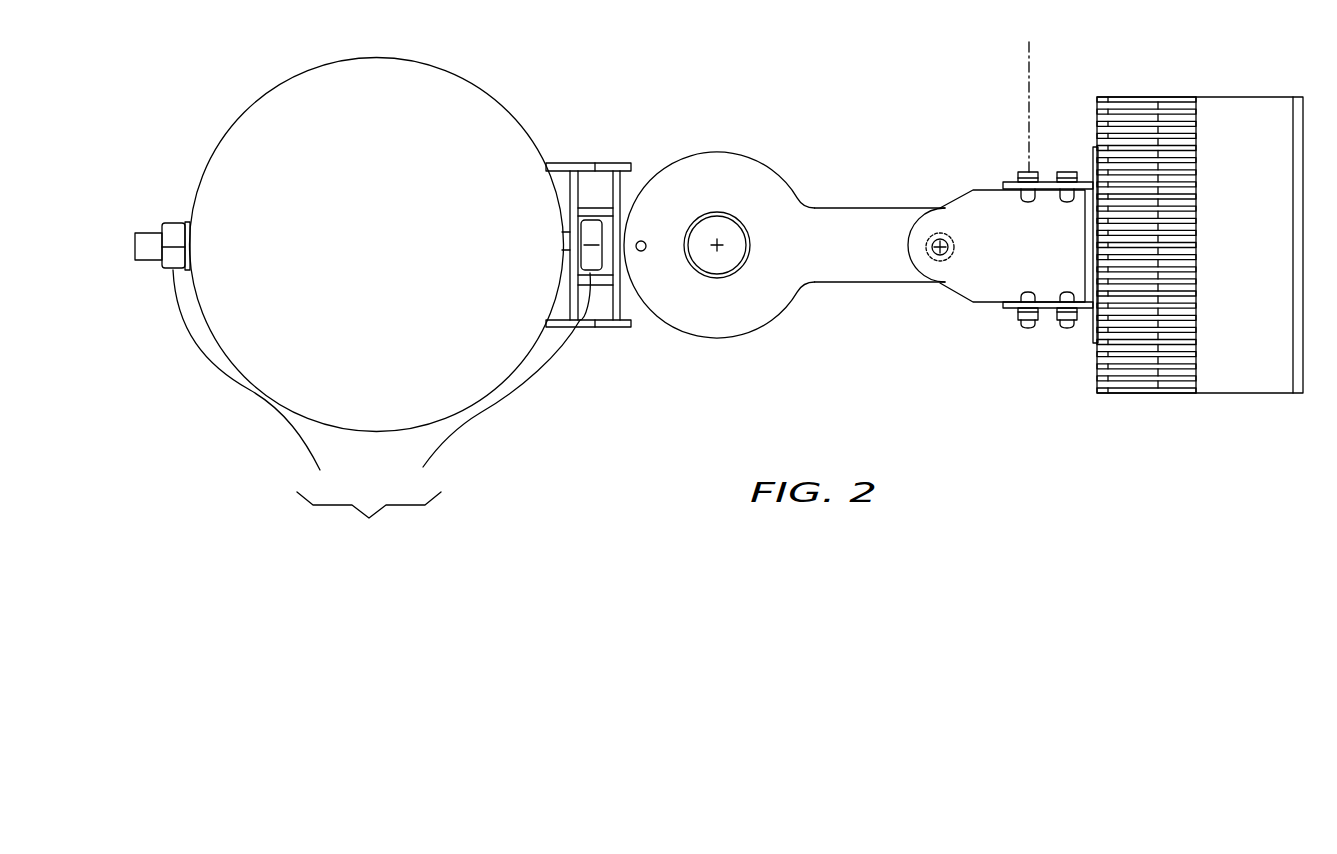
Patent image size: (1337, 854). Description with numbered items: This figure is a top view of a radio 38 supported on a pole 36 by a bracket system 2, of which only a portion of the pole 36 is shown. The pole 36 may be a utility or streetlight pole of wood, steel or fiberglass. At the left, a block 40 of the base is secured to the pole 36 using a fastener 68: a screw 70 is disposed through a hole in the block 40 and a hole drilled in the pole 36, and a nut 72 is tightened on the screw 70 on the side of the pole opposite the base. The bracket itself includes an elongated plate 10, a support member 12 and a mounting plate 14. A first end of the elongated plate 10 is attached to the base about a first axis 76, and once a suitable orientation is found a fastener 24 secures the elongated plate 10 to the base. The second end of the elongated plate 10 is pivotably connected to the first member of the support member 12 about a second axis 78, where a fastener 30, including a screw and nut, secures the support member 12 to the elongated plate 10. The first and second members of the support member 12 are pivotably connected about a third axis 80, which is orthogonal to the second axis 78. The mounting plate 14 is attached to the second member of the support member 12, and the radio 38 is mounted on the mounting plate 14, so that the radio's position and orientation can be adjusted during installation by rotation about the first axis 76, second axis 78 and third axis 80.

The bracket system 2 is at (835, 118).
The elongated plate 10 is at (855, 208).
The support member 12 is at (995, 190).
The mounting plate 14 is at (1093, 330).
The fastener 24 is at (712, 212).
The fastener 30 is at (938, 232).
The pole 36 is at (506, 110).
The radio 38 is at (1170, 97).
The block 40 is at (577, 163).
The fastener 68 is at (382, 551).
The screw 70 is at (498, 386).
The nut 72 is at (237, 360).
The first axis 76 is at (714, 250).
The second axis 78 is at (935, 260).
The third axis 80 is at (1029, 80).